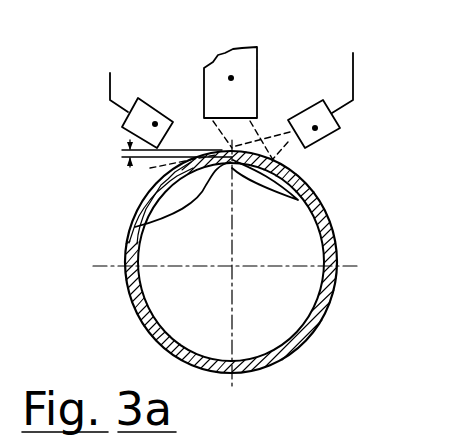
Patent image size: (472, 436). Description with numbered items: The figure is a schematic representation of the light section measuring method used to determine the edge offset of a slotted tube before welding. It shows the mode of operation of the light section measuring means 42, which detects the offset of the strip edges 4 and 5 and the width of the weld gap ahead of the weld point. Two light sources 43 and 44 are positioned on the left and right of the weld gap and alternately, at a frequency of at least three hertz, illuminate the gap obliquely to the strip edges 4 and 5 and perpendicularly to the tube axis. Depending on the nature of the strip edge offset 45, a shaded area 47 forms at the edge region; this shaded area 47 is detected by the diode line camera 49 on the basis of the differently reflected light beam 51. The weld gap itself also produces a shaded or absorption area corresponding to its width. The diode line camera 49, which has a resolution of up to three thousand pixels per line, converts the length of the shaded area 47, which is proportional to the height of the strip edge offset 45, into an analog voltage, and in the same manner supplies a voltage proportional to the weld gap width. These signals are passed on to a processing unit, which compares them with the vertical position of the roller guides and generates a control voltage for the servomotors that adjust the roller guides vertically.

The strip edge 4 is at (294, 197).
The strip edge 5 is at (300, 184).
The light section measuring means 42 is at (366, 41).
The light source 43 is at (155, 124).
The light source 44 is at (316, 128).
The strip edge offset 45 is at (130, 163).
The shaded area 47 is at (135, 218).
The diode line camera 49 is at (231, 78).
The reflected light beam 51 is at (293, 154).